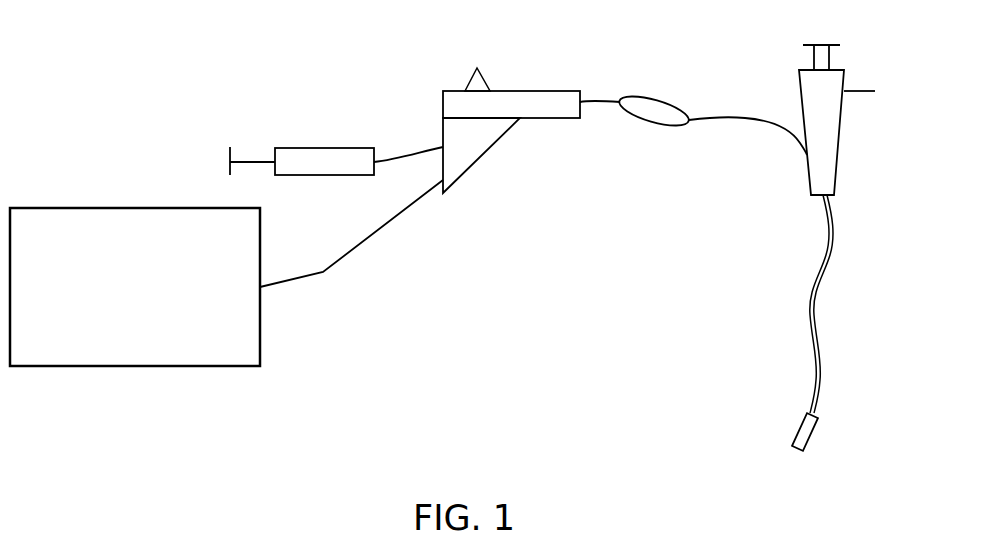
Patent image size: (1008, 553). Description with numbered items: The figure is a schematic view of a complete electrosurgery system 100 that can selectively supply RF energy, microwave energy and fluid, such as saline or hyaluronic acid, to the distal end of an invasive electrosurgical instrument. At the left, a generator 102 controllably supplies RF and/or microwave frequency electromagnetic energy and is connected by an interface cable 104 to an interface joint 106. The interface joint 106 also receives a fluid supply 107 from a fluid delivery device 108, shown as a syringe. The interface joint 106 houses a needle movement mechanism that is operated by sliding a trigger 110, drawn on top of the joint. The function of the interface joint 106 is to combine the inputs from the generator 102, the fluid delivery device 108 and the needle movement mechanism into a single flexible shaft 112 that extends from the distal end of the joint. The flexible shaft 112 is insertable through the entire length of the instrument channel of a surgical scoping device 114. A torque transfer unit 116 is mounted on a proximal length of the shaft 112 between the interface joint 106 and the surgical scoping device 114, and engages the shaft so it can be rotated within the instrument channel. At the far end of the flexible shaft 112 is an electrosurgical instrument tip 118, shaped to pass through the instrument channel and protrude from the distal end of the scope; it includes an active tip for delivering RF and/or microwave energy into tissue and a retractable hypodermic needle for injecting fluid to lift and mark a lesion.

The electrosurgery system 100 is at (162, 87).
The generator 102 is at (160, 300).
The interface cable 104 is at (367, 239).
The interface joint 106 is at (490, 147).
The fluid supply 107 is at (412, 155).
The fluid delivery device 108 is at (313, 148).
The trigger 110 is at (485, 81).
The flexible shaft 112 is at (596, 100).
The surgical scoping device 114 is at (844, 157).
The torque transfer unit 116 is at (648, 122).
The electrosurgical instrument tip 118 is at (817, 435).